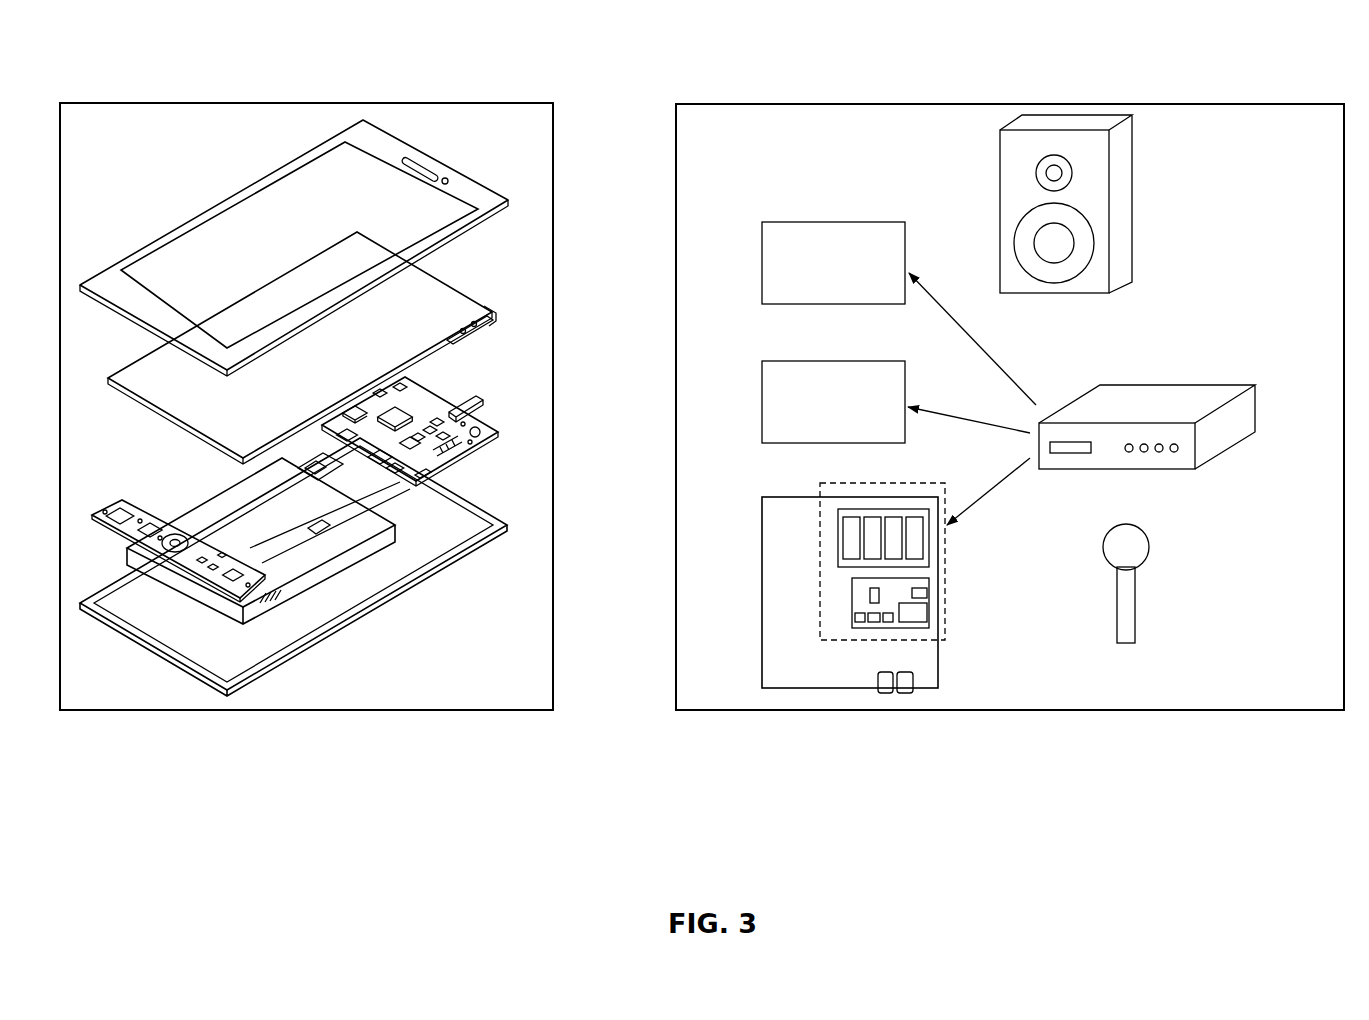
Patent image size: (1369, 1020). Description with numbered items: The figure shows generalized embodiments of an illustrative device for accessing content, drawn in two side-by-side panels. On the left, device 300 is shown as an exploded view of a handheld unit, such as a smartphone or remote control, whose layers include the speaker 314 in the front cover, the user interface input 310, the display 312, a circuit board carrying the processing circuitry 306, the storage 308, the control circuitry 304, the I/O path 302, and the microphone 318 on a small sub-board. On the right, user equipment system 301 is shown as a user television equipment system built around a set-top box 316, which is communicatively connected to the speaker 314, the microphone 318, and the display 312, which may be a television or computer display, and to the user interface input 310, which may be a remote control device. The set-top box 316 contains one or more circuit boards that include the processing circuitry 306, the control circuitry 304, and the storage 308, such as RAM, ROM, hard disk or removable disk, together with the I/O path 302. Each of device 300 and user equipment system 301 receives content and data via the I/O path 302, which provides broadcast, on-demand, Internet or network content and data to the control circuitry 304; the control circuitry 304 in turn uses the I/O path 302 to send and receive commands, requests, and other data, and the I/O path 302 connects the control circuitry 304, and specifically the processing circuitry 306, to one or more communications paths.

The device 300 is at (150, 50).
The user equipment system 301 is at (1200, 66).
The I/O path 302 is at (162, 558).
The control circuitry 304 is at (820, 612).
The processing circuitry 306 is at (852, 590).
The storage 308 is at (838, 537).
The user interface input 310 is at (762, 262).
The display 312 is at (762, 372).
The speaker 314 is at (995, 208).
The set-top box 316 is at (1140, 381).
The microphone 318 is at (1106, 596).